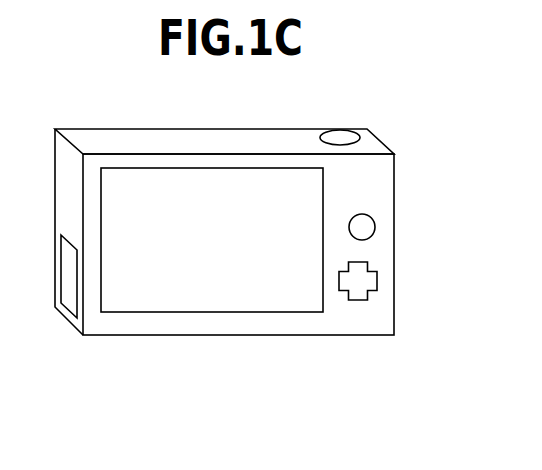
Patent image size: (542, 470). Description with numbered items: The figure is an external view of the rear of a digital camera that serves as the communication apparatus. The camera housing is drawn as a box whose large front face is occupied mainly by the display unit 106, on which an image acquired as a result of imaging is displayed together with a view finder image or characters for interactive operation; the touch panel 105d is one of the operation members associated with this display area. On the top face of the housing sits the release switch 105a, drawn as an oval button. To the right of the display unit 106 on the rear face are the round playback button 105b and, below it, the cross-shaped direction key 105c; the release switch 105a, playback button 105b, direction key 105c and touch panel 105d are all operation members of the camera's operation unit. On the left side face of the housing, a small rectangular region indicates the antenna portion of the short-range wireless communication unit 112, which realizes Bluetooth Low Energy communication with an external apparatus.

The release switch 105a is at (340, 138).
The playback button 105b is at (375, 226).
The direction key 105c is at (365, 280).
The touch panel 105d is at (135, 168).
The display unit 106 is at (240, 185).
The short-range wireless communication unit 112 is at (64, 313).